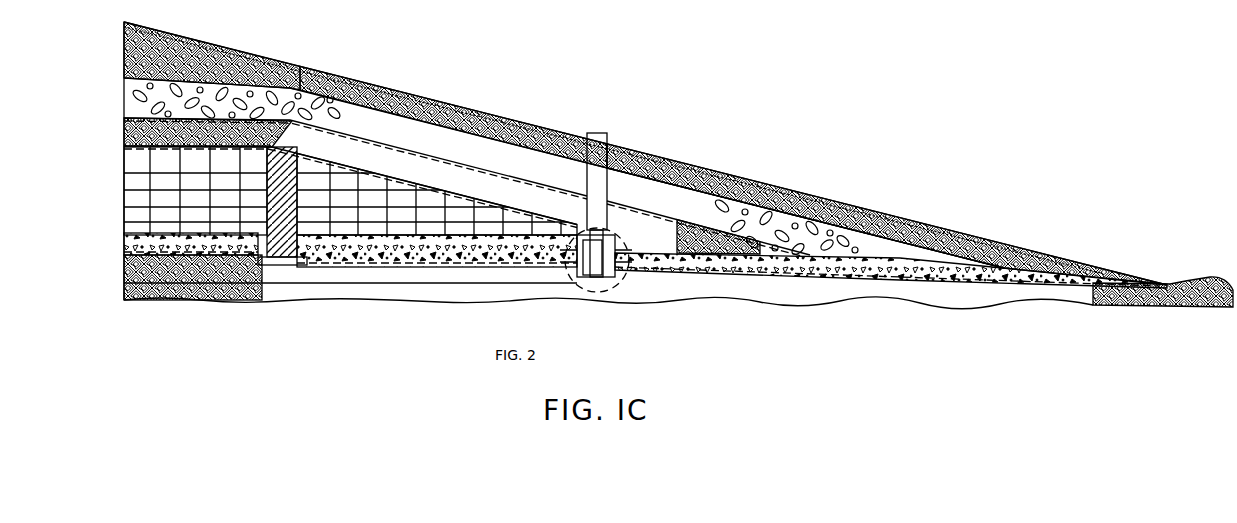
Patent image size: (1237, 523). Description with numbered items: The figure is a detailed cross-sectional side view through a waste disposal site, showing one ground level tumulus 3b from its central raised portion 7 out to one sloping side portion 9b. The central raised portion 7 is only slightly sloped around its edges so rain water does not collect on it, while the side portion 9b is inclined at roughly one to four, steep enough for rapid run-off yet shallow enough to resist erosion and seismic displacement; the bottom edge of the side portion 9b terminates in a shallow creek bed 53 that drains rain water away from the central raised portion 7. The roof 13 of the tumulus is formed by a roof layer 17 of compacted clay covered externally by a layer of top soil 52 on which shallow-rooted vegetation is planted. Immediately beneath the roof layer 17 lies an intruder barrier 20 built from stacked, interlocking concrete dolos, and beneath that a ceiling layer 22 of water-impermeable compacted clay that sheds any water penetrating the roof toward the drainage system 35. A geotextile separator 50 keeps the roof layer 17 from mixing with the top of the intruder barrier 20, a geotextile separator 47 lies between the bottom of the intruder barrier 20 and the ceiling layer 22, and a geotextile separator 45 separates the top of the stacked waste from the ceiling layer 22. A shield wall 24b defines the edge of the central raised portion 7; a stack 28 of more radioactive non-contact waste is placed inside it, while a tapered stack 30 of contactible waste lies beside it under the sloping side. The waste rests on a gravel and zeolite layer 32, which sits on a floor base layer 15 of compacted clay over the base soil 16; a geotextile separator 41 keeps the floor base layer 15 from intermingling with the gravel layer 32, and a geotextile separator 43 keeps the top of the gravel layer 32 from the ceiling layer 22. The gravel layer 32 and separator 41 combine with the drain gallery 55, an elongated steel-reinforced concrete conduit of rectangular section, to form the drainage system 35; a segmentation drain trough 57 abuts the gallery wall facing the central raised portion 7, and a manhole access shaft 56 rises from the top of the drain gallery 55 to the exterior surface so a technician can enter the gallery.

The central raised portion 7 is at (118, 57).
The roof 13 is at (397, 81).
The floor base layer 15 is at (177, 46).
The roof layer 17 is at (203, 60).
The intruder barrier 20 is at (343, 92).
The ceiling layer 22 is at (123, 128).
The stack of non-contact waste 28 is at (136, 183).
The tapered stacks of contactible waste 30 is at (356, 213).
The shield wall 24b is at (273, 258).
The geotextile separator 41 is at (320, 263).
The gravel and zeolite layer 32 is at (497, 263).
The segmentation drain trough 57 is at (430, 266).
The base soil 16 is at (157, 303).
The shallow creek bed 53 is at (1168, 283).
The geotextile separator 50 is at (443, 120).
The layer of top soil 52 is at (688, 160).
The ground level tumulus 3b is at (649, 91).
The sloping side portion 9b is at (759, 172).
The geotextile separator 47 is at (480, 164).
The geotextile separator 45 is at (492, 203).
The manhole access shaft 56 is at (603, 137).
The drain gallery 55 is at (559, 278).
The geotextile separator 43 is at (608, 290).
The drainage system 35 is at (593, 310).